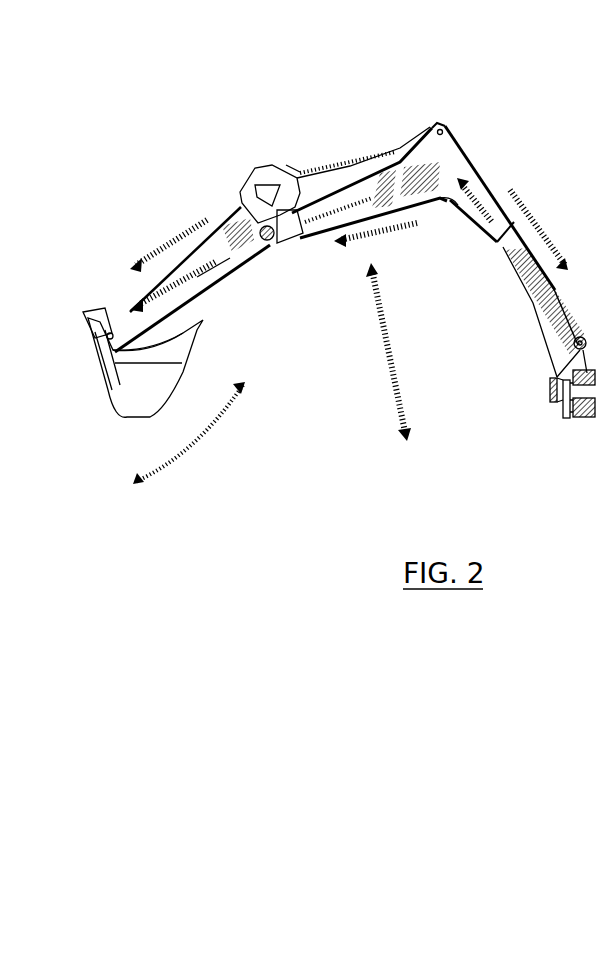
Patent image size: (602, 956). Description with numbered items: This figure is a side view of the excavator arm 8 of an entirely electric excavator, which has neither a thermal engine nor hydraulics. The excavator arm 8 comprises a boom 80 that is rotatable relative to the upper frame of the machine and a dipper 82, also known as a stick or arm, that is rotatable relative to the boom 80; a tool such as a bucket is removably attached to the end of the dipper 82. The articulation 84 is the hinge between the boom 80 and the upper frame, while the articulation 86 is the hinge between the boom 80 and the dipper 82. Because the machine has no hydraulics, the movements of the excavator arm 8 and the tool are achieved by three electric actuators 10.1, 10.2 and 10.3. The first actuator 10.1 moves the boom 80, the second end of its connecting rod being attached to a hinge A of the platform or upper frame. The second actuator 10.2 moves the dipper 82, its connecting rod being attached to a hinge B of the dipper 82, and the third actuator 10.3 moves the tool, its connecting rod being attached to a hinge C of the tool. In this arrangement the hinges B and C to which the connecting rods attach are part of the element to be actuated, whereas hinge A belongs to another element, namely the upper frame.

The excavator arm 8 is at (282, 507).
The first actuator 10.1 is at (425, 273).
The second actuator 10.2 is at (287, 152).
The third actuator 10.3 is at (78, 292).
The boom 80 is at (465, 163).
The dipper 82 is at (197, 277).
The articulation between boom and upper frame 84 is at (582, 342).
The articulation between boom and dipper 86 is at (268, 240).
The hinge of the upper frame A is at (557, 377).
The hinge of the dipper B is at (300, 165).
The hinge of the tool C is at (87, 323).